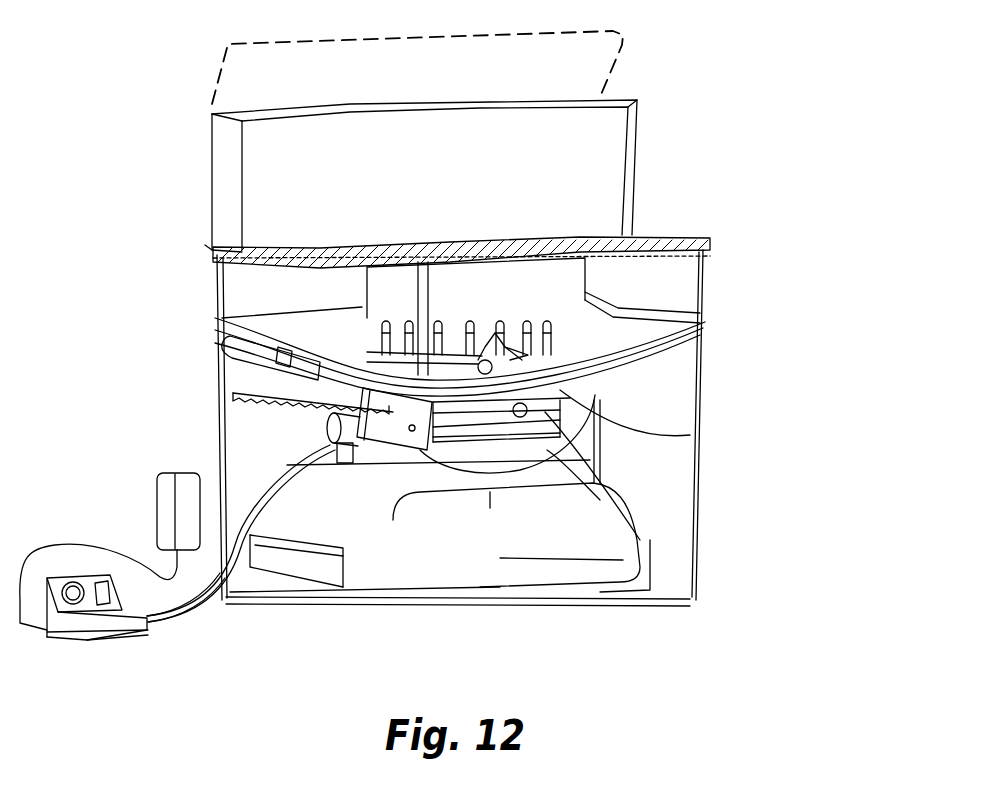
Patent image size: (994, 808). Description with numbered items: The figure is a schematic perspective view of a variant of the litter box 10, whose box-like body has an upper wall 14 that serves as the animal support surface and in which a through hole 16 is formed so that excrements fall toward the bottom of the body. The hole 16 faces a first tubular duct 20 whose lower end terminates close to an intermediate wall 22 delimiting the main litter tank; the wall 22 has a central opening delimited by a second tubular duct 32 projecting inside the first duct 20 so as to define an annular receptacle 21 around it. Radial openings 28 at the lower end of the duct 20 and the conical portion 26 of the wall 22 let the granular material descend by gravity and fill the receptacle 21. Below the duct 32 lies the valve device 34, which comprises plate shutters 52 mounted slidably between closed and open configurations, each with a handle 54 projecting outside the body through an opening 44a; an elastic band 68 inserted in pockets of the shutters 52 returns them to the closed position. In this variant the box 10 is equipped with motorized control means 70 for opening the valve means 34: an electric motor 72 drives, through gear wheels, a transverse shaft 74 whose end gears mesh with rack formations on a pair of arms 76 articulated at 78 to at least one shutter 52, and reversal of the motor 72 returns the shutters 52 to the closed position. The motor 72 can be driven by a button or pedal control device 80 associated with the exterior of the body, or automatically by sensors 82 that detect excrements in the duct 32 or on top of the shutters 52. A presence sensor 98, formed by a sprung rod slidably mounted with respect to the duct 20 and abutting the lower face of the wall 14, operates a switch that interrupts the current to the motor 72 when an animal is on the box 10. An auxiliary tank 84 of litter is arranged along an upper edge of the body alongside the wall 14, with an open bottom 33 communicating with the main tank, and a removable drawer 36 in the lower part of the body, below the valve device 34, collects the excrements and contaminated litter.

The box 10 is at (740, 205).
The upper wall 14 is at (247, 193).
The through hole 16 is at (490, 332).
The first tubular duct 20 is at (257, 300).
The annular receptacle 21 is at (505, 347).
The intermediate wall 22 is at (650, 325).
The conical portion 26 is at (698, 293).
The radial openings 28 is at (485, 362).
The second tubular duct 32 is at (472, 330).
The bottom 33 is at (233, 250).
The valve device 34 is at (665, 362).
The drawer 36 is at (688, 590).
The opening 44a is at (665, 363).
The plate shutter 52 is at (320, 322).
The handle 54 is at (247, 353).
The elastic band 68 is at (545, 397).
The motorized control means 70 is at (383, 467).
The electric motor 72 is at (368, 430).
The transverse shaft 74 is at (412, 428).
The arms 76 is at (320, 418).
The articulation 78 is at (560, 407).
The button or pedal control device 80 is at (130, 650).
The sensors 82 is at (497, 335).
The auxiliary tank 84 is at (268, 148).
The presence sensor 98 is at (422, 293).